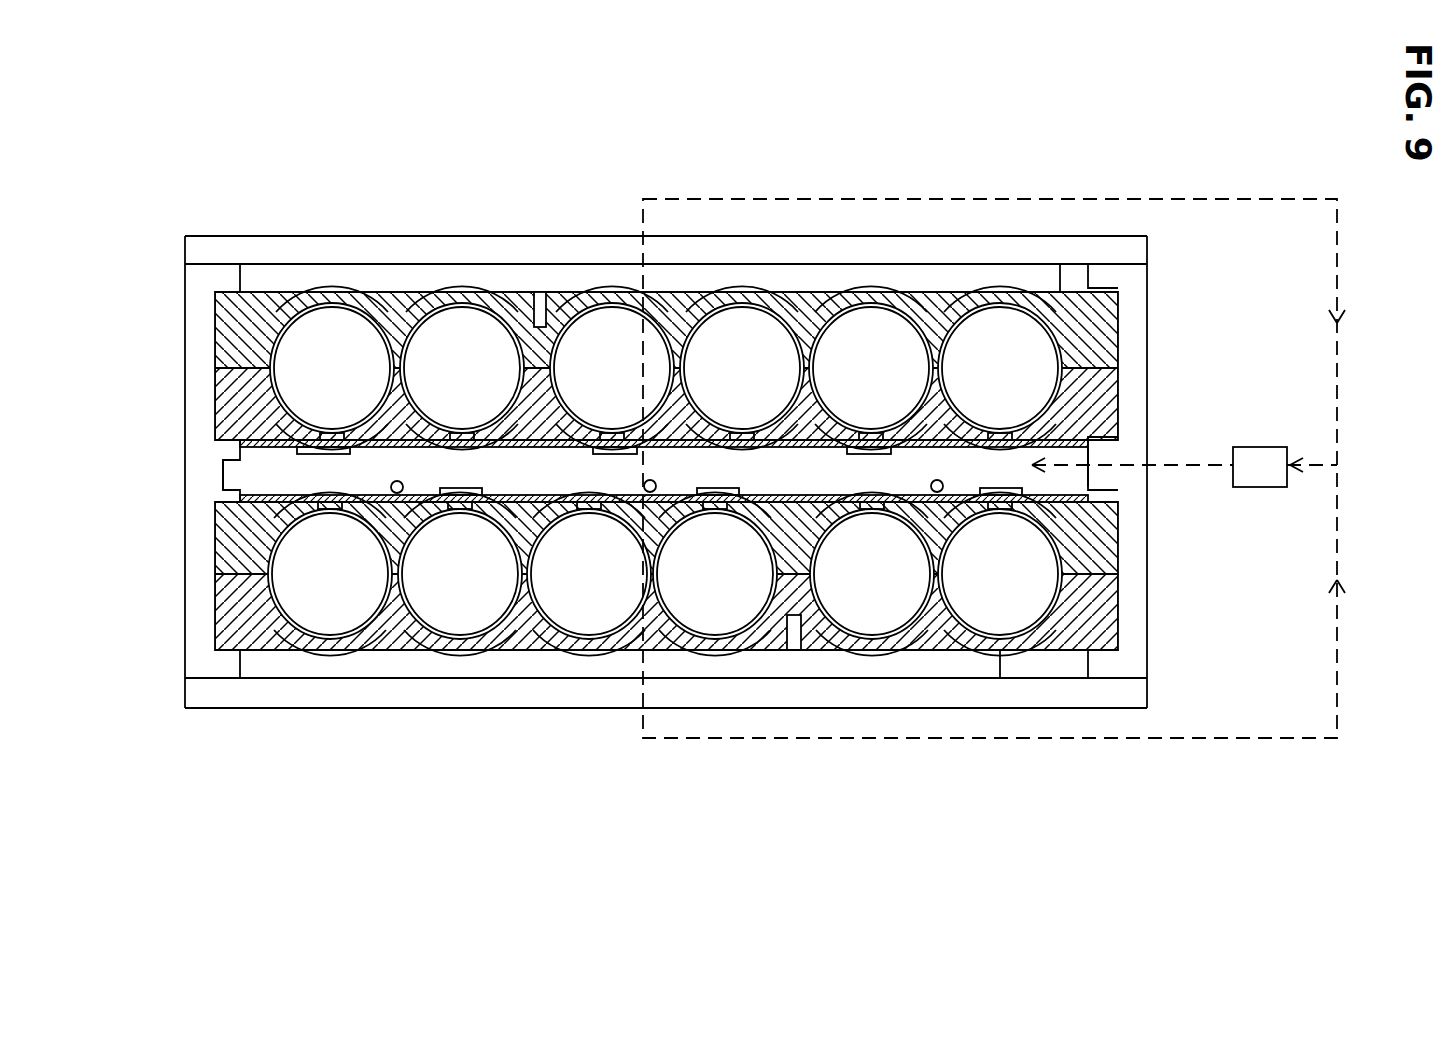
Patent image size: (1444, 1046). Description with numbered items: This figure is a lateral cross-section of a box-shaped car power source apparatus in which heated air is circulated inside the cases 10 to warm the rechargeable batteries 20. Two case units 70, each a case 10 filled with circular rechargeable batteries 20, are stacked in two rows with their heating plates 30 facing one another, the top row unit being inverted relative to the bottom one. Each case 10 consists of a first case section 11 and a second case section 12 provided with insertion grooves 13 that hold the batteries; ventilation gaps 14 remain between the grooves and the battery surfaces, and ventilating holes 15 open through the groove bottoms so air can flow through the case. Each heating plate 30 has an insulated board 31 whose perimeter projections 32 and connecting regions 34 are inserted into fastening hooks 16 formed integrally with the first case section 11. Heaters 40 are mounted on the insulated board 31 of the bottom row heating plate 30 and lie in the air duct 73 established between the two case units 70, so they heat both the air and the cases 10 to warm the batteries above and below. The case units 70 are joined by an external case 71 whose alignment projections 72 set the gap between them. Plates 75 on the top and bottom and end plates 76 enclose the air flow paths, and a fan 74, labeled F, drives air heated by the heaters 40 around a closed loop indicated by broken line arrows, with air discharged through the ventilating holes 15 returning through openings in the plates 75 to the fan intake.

The case 10 is at (1245, 300).
The first case section 11 is at (1105, 392).
The second case section 12 is at (1105, 332).
The insertion grooves 13 is at (432, 300).
The ventilation gaps 14 is at (503, 310).
The ventilating holes 15 is at (478, 292).
The fastening hooks 16 is at (1000, 488).
The rechargeable batteries 20 is at (600, 335).
The heating plate 30 is at (748, 470).
The insulated board 31 is at (413, 452).
The projections 32 is at (265, 540).
The connecting regions 34 is at (600, 447).
The heaters 40 is at (390, 486).
The case unit 70 is at (815, 285).
The external case 71 is at (185, 380).
The alignment projections 72 is at (226, 470).
The air duct 73 is at (962, 455).
The fan 74 is at (1277, 488).
The plates 75 is at (760, 250).
The end plates 76 is at (1068, 278).